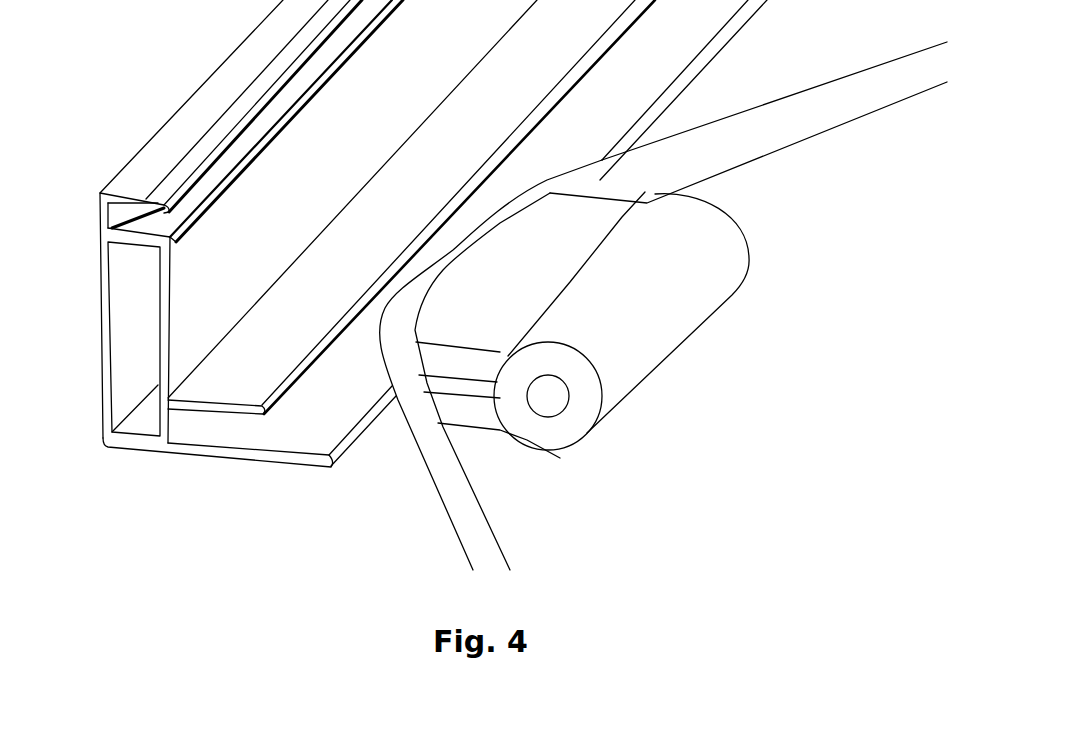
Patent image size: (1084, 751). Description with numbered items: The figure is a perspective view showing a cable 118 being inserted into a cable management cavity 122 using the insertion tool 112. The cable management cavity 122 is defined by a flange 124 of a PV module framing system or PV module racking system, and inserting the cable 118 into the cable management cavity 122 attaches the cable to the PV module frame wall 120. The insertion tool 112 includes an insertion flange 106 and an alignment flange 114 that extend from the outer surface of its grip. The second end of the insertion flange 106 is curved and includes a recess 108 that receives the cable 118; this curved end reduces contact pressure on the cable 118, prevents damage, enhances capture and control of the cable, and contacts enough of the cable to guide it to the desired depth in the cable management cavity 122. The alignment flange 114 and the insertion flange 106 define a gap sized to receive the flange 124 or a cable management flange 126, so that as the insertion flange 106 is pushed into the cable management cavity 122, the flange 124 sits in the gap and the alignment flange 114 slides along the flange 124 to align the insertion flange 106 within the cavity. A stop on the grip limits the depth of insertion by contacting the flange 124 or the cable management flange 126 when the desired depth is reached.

The PV module frame wall 120 is at (160, 128).
The insertion flange 106 is at (553, 240).
The insertion tool 112 is at (687, 355).
The recess 108 is at (497, 380).
The alignment flange 114 is at (468, 412).
The cable 118 is at (487, 553).
The cable management cavity 122 is at (218, 422).
The flange 124 is at (266, 457).
The cable management flange 126 is at (233, 395).